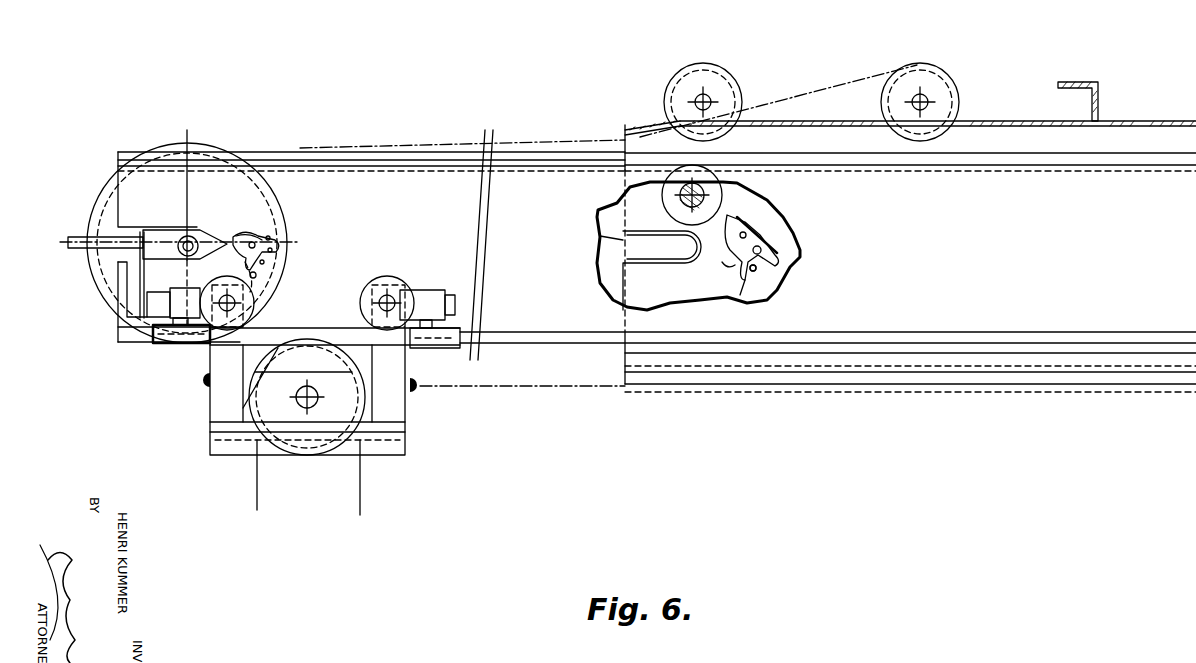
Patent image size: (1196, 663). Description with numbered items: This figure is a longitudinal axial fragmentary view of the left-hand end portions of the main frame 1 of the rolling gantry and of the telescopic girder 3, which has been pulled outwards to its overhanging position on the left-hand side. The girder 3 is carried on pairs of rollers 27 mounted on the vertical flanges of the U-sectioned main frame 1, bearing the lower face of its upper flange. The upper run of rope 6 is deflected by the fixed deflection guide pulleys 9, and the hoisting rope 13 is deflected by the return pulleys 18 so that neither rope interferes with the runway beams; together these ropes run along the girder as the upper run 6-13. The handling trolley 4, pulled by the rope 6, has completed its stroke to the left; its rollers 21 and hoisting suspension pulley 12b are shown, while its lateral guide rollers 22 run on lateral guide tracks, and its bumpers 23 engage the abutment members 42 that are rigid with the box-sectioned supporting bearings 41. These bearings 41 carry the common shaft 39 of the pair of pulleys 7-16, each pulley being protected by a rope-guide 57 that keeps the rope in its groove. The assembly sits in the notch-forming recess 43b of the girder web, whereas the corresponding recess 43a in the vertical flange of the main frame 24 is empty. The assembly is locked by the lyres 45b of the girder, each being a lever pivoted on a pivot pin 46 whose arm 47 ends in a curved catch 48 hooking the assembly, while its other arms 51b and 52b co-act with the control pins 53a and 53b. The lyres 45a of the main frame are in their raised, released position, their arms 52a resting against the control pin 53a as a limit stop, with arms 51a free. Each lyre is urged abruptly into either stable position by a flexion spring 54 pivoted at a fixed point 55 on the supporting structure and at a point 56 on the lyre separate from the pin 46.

The main frame 1 is at (1142, 120).
The telescopic girder 3 is at (374, 178).
The trolley 4 is at (408, 447).
The rope 6 is at (505, 389).
The upper run of rope and hoisting rope 6-13 is at (518, 143).
The pair of pulleys 7-16 is at (110, 182).
The deflection guide pulley 9 is at (667, 103).
The return and suspension pulley 12b is at (307, 397).
The hoisting rope 13 is at (380, 495).
The return pulley 18 is at (915, 66).
The wheel or roller 21 is at (396, 282).
The lateral guide roller 22 is at (200, 346).
The bumper 23 is at (180, 298).
The vertical flange of the main frame 24 is at (1112, 121).
The roller 27 is at (660, 187).
The common shaft 39 is at (194, 235).
The supporting bearing 41 is at (127, 288).
The stop member 42 is at (127, 318).
The notch-forming recess of the main frame 43a is at (632, 267).
The notch-forming recess of the telescopic girder 43b is at (118, 230).
The latch or lyre of the main frame 45a is at (765, 226).
The latch or lyre of the telescopic girder 45b is at (245, 234).
The pivot pin 46 is at (272, 270).
The arm 47 is at (236, 232).
The curved catch 48 is at (735, 196).
The arm 51a is at (735, 265).
The arm 51b is at (236, 258).
The arm 52a is at (760, 272).
The arm 52b is at (268, 260).
The control pin 53a is at (752, 272).
The control pin 53b is at (256, 285).
The flexion spring 54 is at (282, 238).
The fixed point 55 is at (278, 252).
The spring attachment point 56 is at (258, 240).
The rope-guide 57 is at (66, 248).